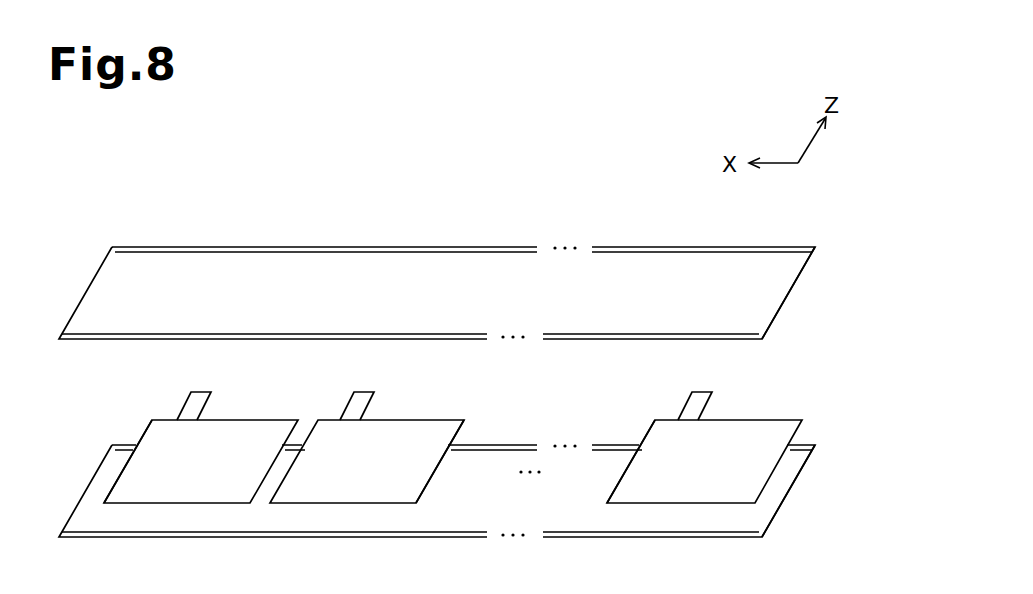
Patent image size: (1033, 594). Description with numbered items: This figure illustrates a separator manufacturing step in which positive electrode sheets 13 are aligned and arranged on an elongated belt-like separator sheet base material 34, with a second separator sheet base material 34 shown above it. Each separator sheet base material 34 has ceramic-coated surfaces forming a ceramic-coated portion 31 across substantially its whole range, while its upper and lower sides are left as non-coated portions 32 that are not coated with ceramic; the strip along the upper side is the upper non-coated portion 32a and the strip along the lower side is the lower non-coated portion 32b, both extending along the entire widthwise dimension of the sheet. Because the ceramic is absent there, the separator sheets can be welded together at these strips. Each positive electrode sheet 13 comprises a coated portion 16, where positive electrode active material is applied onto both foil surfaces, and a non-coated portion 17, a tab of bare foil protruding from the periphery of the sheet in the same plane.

The positive electrode sheet 13 is at (143, 430).
The coated portion 16 is at (137, 478).
The non-coated portion 17 is at (193, 394).
The ceramic-coated portion 31 is at (776, 296).
The non-coated portions 32 is at (437, 393).
The upper non-coated portion 32a is at (608, 247).
The lower non-coated portion 32b is at (590, 339).
The separator sheet base material 34 is at (762, 247).